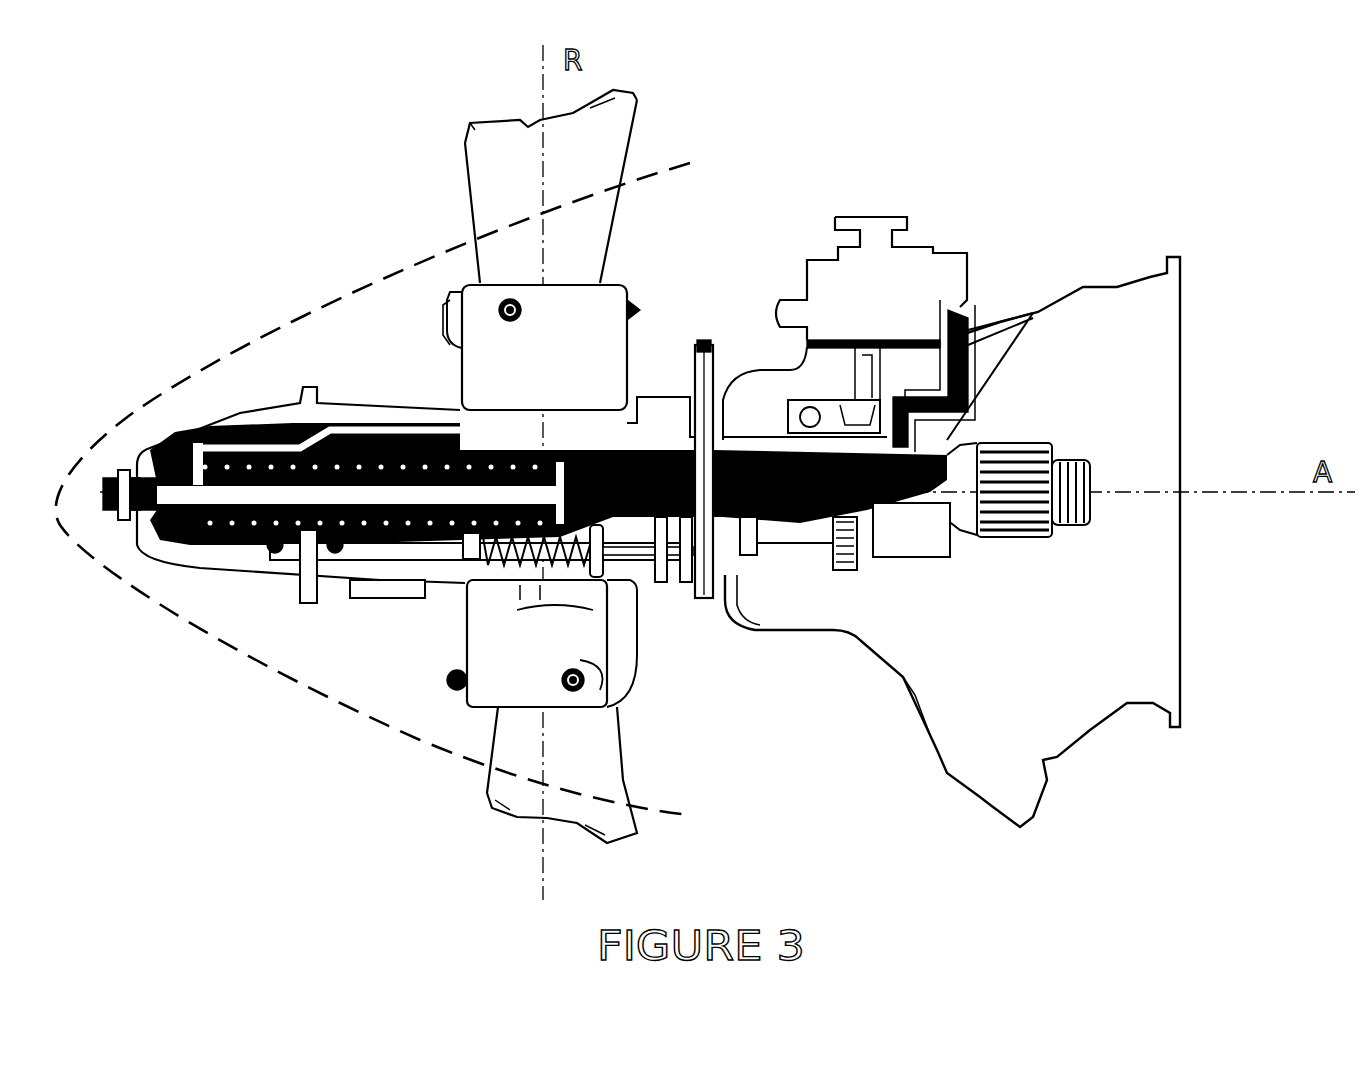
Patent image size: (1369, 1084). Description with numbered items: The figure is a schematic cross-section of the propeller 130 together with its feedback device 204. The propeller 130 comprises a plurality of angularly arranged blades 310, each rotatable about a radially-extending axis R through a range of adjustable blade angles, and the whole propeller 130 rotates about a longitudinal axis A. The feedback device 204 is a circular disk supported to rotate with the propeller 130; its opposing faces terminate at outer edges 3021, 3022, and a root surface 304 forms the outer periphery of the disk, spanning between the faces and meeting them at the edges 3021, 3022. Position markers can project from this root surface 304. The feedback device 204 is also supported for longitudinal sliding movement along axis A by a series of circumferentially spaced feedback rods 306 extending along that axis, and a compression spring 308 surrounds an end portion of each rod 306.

The propeller 130 is at (232, 250).
The blades 310 is at (463, 138).
The feedback device 204 is at (706, 344).
The root surface 304 is at (685, 400).
The compression spring 308 is at (480, 563).
The outer edge 3021 is at (687, 573).
The outer edge 3022 is at (720, 577).
The feedback rods 306 is at (622, 548).